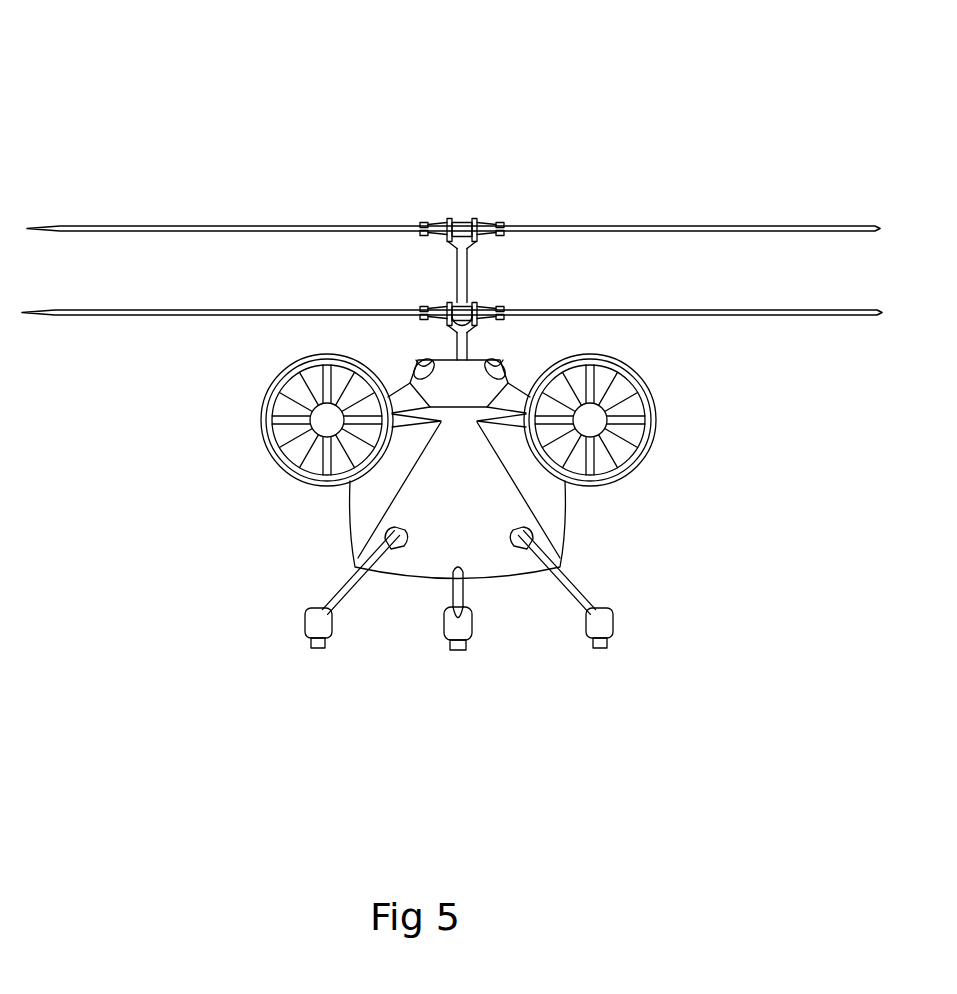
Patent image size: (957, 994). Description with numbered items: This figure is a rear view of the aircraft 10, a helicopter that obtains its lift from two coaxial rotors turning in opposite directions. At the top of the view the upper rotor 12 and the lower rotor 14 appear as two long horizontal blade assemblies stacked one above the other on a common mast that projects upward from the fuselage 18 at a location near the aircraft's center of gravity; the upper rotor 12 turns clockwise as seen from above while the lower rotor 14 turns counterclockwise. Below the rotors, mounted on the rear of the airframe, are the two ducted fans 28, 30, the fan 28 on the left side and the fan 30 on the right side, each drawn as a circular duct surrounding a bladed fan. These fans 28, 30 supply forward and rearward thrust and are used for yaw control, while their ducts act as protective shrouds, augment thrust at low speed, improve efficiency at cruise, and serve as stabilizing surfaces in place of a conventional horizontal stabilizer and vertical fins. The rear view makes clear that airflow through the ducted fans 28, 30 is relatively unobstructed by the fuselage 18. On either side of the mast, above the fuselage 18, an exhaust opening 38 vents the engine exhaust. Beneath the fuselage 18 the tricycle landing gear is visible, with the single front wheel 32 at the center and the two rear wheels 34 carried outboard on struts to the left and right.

The aircraft 10 is at (267, 62).
The upper rotor 12 is at (904, 238).
The lower rotor 14 is at (908, 322).
The fuselage 18 is at (468, 283).
The ducted fan 28 is at (262, 441).
The ducted fan 30 is at (645, 455).
The front wheel 32 is at (465, 633).
The rear wheels 34 is at (305, 632).
The exhaust opening 38 is at (436, 366).